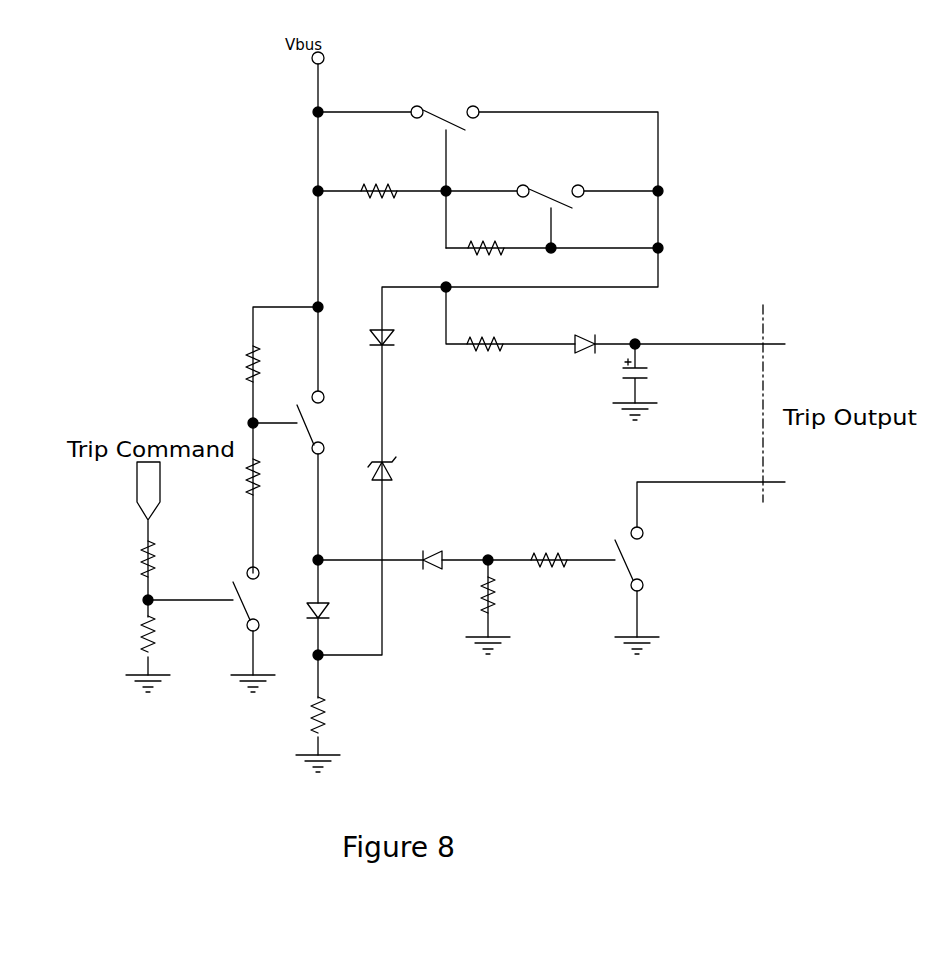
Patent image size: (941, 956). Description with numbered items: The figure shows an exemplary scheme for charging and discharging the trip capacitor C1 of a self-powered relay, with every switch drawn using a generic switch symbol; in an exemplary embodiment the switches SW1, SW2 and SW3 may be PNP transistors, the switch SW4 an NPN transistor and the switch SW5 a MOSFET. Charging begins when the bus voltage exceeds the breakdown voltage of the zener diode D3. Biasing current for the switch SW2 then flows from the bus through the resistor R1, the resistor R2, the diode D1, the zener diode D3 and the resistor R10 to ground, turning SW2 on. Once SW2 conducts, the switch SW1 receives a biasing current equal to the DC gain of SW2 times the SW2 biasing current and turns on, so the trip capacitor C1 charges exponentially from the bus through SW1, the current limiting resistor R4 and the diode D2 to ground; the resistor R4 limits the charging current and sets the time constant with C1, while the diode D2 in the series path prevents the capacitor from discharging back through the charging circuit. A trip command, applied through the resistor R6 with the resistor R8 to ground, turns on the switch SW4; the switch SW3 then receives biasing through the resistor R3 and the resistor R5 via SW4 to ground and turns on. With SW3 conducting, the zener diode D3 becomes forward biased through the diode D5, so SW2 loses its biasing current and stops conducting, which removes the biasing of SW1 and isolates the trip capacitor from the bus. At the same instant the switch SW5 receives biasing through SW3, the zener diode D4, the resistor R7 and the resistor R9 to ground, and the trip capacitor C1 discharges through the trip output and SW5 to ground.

The switch SW1 is at (445, 102).
The resistor R1 is at (379, 174).
The switch SW2 is at (550, 181).
The resistor R2 is at (486, 232).
The resistor R3 is at (278, 364).
The switch SW3 is at (326, 422).
The resistor R5 is at (278, 477).
The diode D1 is at (398, 336).
The zener diode D3 is at (403, 463).
The current limiting resistor R4 is at (485, 328).
The diode D2 is at (591, 329).
The trip capacitor C1 is at (648, 382).
The zener diode D4 is at (435, 541).
The resistor R7 is at (549, 544).
The switch SW5 is at (655, 590).
The diode D5 is at (341, 610).
The resistor R9 is at (499, 615).
The resistor R10 is at (340, 734).
The resistor R6 is at (173, 559).
The switch SW4 is at (226, 629).
The resistor R8 is at (166, 654).